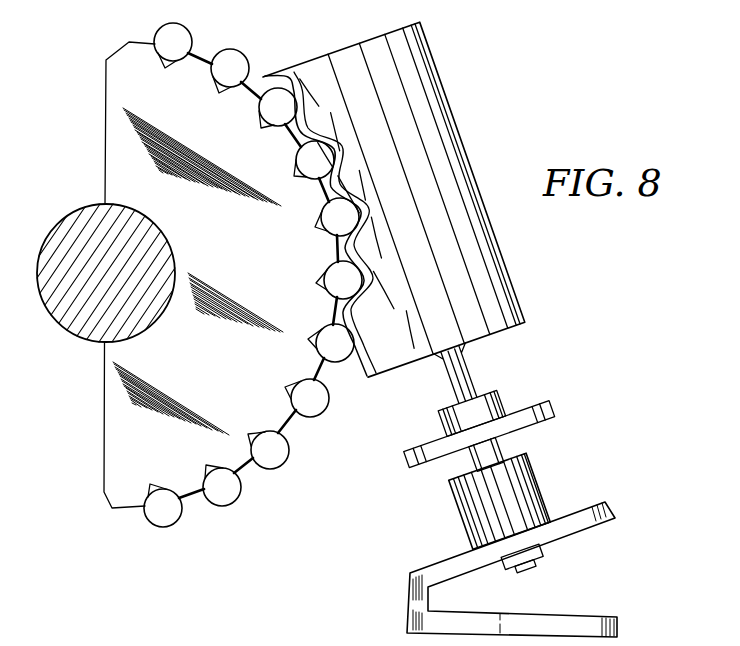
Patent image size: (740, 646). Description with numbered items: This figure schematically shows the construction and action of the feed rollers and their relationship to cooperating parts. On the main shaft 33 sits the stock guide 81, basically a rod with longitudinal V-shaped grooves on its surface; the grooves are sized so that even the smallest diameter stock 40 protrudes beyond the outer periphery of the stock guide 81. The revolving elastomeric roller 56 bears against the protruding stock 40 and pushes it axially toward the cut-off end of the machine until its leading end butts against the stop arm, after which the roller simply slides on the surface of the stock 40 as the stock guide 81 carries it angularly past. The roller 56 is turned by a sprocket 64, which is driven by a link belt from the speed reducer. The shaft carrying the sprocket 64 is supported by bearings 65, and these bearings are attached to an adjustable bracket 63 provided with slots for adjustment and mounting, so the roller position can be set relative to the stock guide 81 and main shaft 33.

The main shaft 33 is at (77, 237).
The stock 40 is at (282, 453).
The elastomeric roller 56 is at (442, 153).
The adjustable bracket 63 is at (432, 577).
The sprocket 64 is at (533, 417).
The bearings 65 is at (515, 497).
The stock guide 81 is at (263, 266).